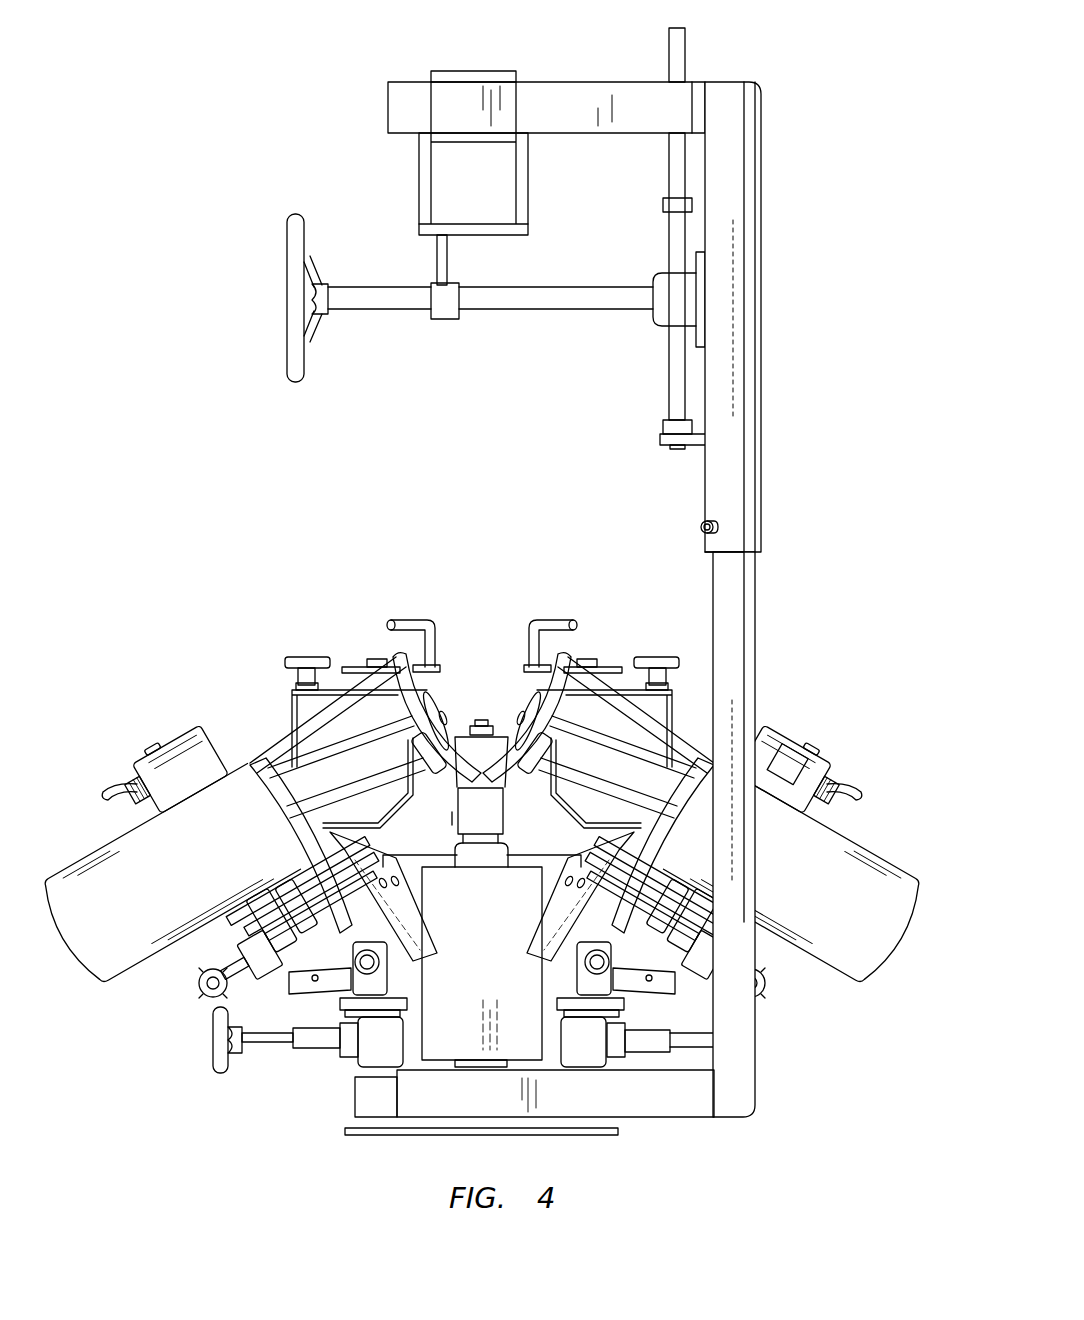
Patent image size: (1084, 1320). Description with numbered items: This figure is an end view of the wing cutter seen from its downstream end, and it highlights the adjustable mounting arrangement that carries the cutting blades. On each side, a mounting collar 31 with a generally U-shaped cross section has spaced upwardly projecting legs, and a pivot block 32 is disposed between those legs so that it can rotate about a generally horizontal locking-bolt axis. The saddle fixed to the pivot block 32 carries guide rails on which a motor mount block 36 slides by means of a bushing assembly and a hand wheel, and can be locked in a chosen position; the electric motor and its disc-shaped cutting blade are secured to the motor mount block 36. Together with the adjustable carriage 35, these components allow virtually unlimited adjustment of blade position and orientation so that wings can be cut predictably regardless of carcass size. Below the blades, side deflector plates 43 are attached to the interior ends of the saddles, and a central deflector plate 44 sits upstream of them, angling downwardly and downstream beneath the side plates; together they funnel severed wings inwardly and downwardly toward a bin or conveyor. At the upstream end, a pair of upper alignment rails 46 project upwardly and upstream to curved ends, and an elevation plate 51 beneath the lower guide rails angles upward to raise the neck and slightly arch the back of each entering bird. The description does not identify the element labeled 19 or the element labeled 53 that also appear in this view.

The base frame 19 is at (673, 1102).
The mounting collar 31 is at (330, 997).
The pivot block 32 is at (400, 968).
The adjustable carriage 35 is at (277, 947).
The motor mount block 36 is at (232, 936).
The side deflector plates 43 is at (553, 907).
The central deflector plate 44 is at (469, 938).
The upper alignment rails 46 is at (530, 655).
The elevation plate 51 is at (481, 748).
The nozzle nut 53 is at (483, 718).